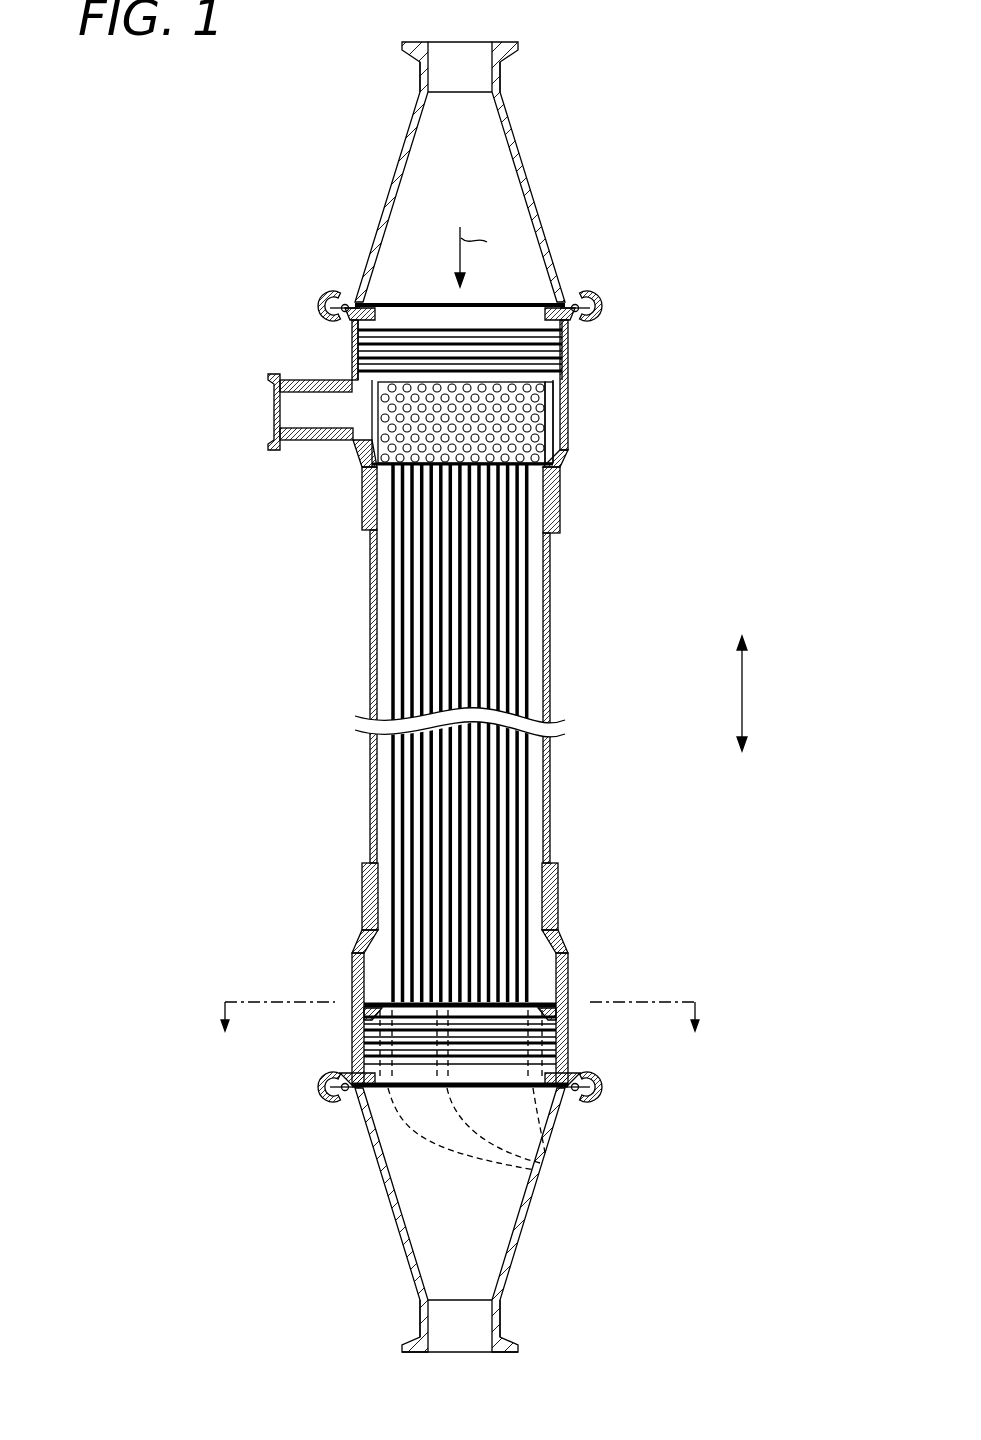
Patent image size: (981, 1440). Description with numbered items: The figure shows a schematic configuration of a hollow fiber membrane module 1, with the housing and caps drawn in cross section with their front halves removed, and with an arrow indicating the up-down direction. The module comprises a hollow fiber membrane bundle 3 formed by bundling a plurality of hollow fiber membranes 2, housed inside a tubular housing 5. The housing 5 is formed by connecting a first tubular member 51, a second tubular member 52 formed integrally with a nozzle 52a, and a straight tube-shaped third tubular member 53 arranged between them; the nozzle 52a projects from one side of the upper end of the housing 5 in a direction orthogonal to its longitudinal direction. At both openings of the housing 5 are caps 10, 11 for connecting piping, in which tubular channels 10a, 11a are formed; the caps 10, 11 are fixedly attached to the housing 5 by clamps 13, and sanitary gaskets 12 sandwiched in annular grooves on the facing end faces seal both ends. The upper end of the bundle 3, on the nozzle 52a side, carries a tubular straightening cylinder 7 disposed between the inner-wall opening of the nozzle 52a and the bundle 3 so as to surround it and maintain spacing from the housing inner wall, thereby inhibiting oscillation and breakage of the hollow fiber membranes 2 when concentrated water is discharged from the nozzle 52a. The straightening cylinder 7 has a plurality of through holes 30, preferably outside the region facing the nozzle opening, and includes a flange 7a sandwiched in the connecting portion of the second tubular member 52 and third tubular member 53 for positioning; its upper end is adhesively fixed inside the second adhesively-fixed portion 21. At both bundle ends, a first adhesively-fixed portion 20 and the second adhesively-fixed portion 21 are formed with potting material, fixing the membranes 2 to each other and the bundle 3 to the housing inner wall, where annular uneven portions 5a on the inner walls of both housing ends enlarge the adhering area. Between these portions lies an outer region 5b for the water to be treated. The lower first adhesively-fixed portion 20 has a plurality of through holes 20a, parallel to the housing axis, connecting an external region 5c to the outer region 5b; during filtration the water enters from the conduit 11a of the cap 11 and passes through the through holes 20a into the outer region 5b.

The hollow fiber membrane module 1 is at (295, 70).
The hollow fiber membrane 2 is at (508, 575).
The hollow fiber membrane bundle 3 is at (459, 717).
The through holes 30 is at (465, 445).
The housing 5 is at (561, 757).
The annular uneven portions 5a is at (354, 347).
The outer region 5b is at (352, 442).
The external region 5c is at (485, 1210).
The straightening cylinder 7 is at (548, 436).
The flange 7a is at (556, 468).
The cap 10 is at (536, 147).
The tubular channel 10a is at (497, 72).
The cap 11 is at (520, 1250).
The conduit 11a is at (498, 1325).
The sanitary gaskets 12 is at (340, 297).
The clamps 13 is at (602, 308).
The first adhesively-fixed portion 20 is at (572, 1052).
The through holes 20a is at (552, 1157).
The second adhesively-fixed portion 21 is at (566, 347).
The first tubular member 51 is at (568, 975).
The second tubular member 52 is at (564, 423).
The nozzle 52a is at (300, 446).
The third tubular member 53 is at (551, 663).